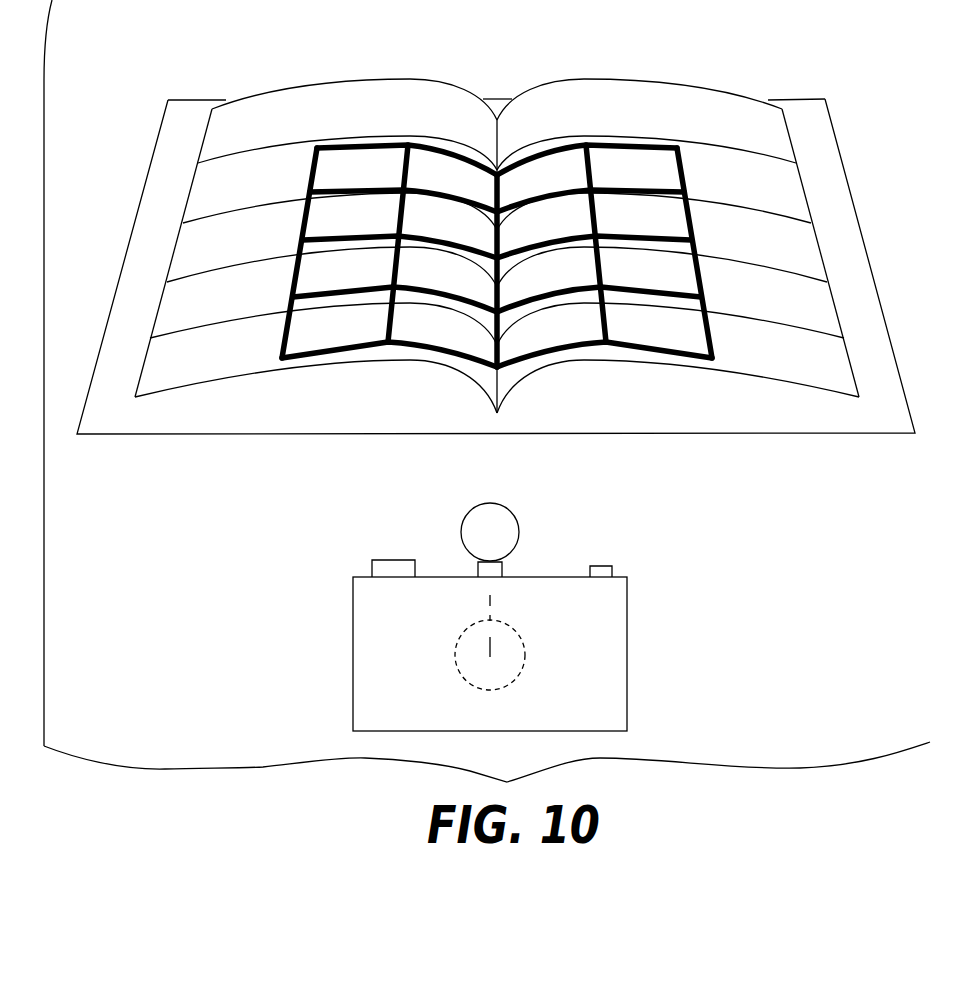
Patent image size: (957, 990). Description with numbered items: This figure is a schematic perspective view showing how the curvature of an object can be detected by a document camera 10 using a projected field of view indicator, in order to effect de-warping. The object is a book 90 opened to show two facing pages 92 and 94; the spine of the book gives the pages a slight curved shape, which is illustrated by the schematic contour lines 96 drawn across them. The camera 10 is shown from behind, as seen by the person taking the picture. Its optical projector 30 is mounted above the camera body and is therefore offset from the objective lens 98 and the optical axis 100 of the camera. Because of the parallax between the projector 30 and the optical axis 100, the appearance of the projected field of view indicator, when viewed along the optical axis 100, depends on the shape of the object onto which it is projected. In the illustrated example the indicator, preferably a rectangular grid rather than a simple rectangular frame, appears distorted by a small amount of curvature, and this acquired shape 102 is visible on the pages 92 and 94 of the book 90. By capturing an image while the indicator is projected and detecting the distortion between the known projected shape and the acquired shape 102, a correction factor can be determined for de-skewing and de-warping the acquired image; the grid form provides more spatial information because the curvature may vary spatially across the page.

The document camera 10 is at (353, 686).
The optical projector 30 is at (509, 508).
The book 90 is at (800, 98).
The facing page 92 is at (390, 78).
The facing page 94 is at (590, 78).
The schematic contour lines 96 is at (213, 213).
The objective lens 98 is at (524, 639).
The optical axis 100 is at (487, 600).
The acquired shape of field of view indicator 102 is at (688, 186).